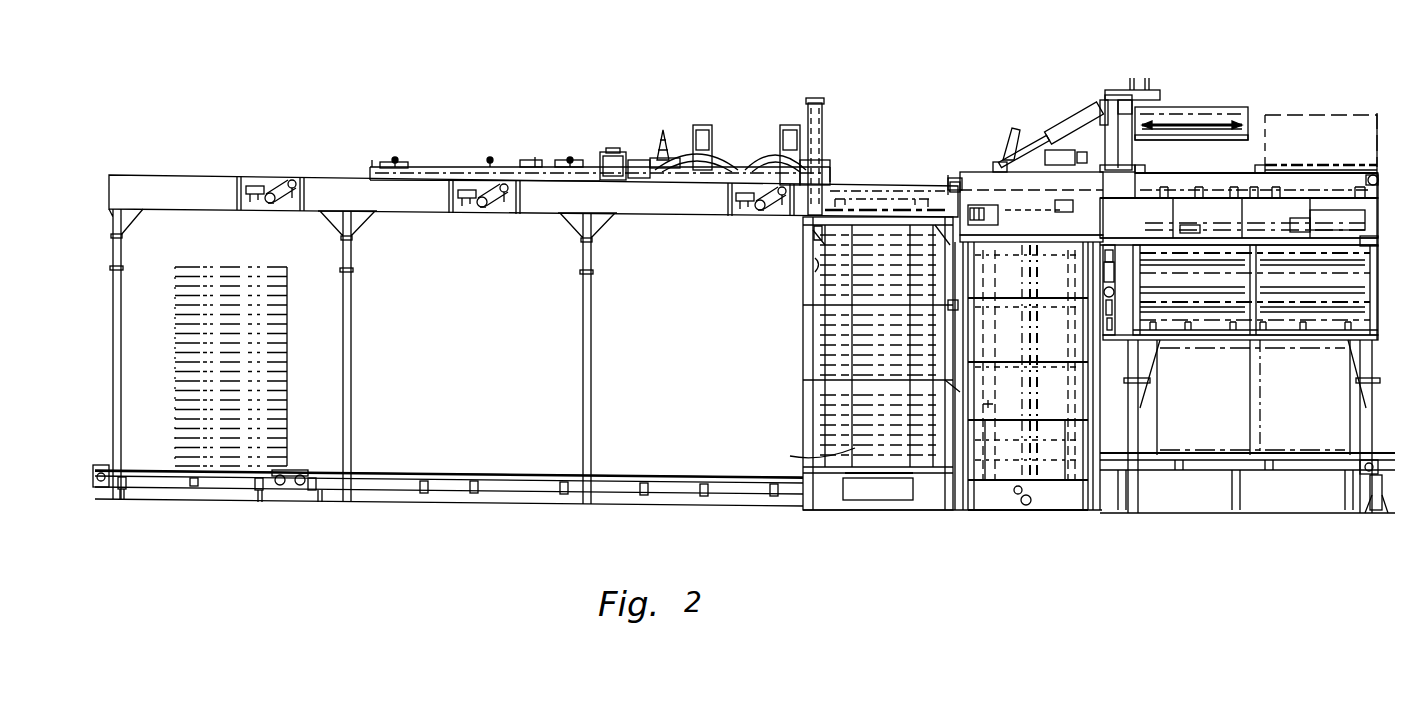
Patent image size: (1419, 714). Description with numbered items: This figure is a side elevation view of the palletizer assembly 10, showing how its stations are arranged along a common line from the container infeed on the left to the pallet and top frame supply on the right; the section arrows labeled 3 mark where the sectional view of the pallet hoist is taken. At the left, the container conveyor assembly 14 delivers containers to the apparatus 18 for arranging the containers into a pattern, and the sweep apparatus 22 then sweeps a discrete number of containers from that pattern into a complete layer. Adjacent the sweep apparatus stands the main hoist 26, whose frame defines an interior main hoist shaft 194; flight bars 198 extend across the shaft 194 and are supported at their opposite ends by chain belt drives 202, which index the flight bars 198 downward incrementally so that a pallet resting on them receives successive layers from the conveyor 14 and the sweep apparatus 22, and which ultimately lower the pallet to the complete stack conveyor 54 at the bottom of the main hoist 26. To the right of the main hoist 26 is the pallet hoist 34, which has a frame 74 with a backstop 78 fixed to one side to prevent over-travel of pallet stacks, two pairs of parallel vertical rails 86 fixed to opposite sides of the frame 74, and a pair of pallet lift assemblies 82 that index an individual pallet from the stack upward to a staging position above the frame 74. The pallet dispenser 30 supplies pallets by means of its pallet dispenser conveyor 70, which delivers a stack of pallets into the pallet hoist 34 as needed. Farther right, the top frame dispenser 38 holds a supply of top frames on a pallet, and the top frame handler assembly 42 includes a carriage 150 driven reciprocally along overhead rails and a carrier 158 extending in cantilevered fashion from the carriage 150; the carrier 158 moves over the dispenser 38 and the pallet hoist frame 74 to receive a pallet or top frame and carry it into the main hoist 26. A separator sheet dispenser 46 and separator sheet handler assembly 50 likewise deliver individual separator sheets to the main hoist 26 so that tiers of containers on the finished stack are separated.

The palletizer assembly 10 is at (616, 72).
The container conveyor assembly 14 is at (200, 183).
The apparatus for arranging containers 18 is at (565, 141).
The sweep apparatus 22 is at (764, 100).
The main hoist 26 is at (790, 395).
The pallet dispenser 30 is at (1382, 458).
The pallet hoist 34 is at (1090, 486).
The top frame dispenser 38 is at (1383, 308).
The top frame handler assembly 42 is at (1370, 217).
The separator sheet dispenser 46 is at (1378, 176).
The separator sheet handler assembly 50 is at (1064, 72).
The complete stack conveyor 54 is at (610, 463).
The pallet dispenser conveyor 70 is at (1200, 448).
The frame 74 is at (1093, 440).
The backstop 78 is at (990, 403).
The pallet lift assemblies 82 is at (990, 178).
The vertical rails 86 is at (994, 352).
The carriage 150 is at (1385, 225).
The carrier 158 is at (1218, 222).
The main hoist shaft 194 is at (925, 458).
The flight bars 198 is at (815, 268).
The chain belt drives 202 is at (820, 232).
The section line 3 is at (1108, 204).